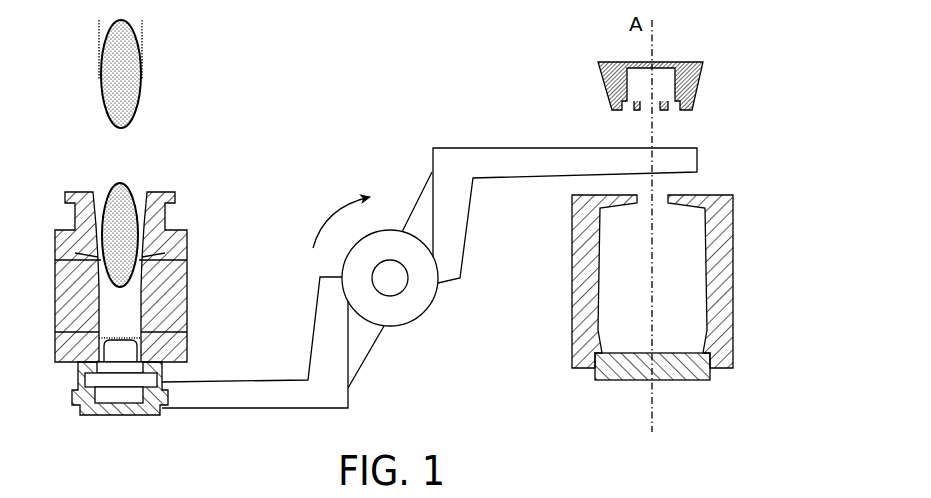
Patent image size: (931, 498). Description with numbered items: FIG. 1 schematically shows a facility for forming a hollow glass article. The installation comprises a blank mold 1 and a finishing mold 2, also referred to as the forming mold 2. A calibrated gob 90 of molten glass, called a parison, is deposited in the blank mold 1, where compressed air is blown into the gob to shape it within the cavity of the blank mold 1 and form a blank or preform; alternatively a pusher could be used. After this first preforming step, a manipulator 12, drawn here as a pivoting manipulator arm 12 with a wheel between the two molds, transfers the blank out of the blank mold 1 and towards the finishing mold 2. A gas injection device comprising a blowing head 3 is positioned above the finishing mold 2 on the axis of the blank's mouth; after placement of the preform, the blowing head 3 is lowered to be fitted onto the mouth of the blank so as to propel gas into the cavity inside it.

The calibrated gob 90 is at (118, 100).
The blank mold 1 is at (208, 281).
The manipulator 12 is at (433, 329).
The finishing mold 2 is at (738, 341).
The blowing head 3 is at (707, 101).